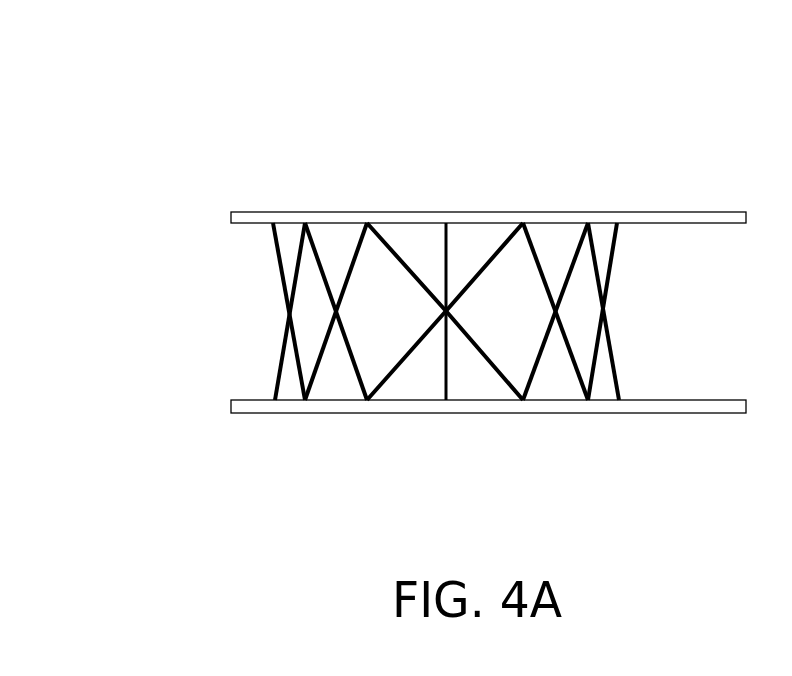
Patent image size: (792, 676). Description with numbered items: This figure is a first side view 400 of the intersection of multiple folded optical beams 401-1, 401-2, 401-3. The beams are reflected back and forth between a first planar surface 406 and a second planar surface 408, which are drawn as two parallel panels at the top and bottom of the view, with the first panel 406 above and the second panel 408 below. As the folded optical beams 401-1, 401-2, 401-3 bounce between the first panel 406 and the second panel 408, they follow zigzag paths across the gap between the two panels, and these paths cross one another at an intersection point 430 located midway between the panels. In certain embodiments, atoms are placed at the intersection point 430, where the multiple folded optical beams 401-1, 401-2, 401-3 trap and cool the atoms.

The first side view 400 is at (479, 99).
The folded optical beam 401-1 is at (272, 248).
The folded optical beam 401-2 is at (280, 388).
The folded optical beam 401-3 is at (448, 237).
The first planar surface 406 is at (628, 212).
The second planar surface 408 is at (495, 405).
The intersection point 430 is at (446, 311).